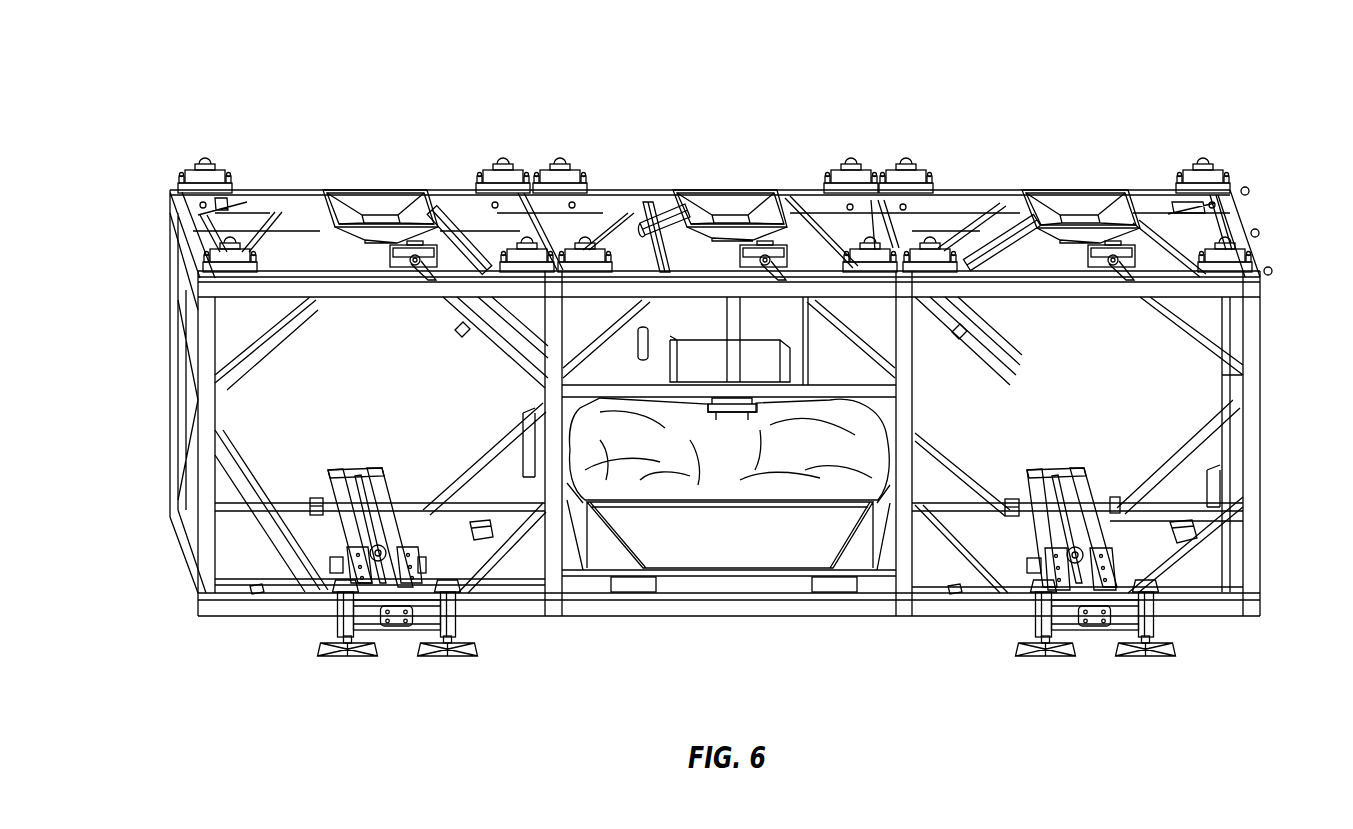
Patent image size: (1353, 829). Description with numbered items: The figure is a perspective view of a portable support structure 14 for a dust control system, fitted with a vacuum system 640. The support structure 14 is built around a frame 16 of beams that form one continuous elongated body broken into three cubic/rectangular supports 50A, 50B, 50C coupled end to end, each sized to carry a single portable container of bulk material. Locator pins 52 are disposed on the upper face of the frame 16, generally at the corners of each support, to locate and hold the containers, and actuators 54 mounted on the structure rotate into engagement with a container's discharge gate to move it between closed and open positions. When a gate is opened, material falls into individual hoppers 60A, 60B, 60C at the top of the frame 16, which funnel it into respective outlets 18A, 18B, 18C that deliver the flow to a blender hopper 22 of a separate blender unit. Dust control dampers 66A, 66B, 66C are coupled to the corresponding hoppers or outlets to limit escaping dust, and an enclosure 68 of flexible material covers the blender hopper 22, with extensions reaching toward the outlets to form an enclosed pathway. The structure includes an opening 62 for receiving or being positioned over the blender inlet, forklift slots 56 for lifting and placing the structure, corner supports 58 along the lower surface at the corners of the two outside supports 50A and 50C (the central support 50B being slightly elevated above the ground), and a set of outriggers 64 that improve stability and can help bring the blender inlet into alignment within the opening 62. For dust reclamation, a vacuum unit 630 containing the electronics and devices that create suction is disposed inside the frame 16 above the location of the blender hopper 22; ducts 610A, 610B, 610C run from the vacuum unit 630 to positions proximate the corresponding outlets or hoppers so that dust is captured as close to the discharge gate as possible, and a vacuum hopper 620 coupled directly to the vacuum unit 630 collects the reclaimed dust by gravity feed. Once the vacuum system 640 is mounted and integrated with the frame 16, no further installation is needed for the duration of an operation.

The support structure 14 is at (190, 88).
The frame 16 is at (205, 490).
The outlet 18A is at (505, 323).
The outlet 18B is at (722, 304).
The outlet 18C is at (952, 323).
The blender hopper 22 is at (715, 548).
The cubic/rectangular support 50A is at (302, 545).
The cubic/rectangular support 50B is at (588, 550).
The cubic/rectangular support 50C is at (1205, 462).
The locator pins 52 is at (203, 163).
The actuators 54 is at (337, 190).
The slots 56 is at (633, 596).
The corner supports 58 is at (487, 523).
The hopper 60A is at (430, 190).
The hopper 60B is at (773, 190).
The hopper 60C is at (1125, 190).
The opening 62 is at (865, 548).
The outriggers 64 is at (330, 647).
The dust control damper 66A is at (385, 215).
The dust control damper 66B is at (738, 215).
The dust control damper 66C is at (1075, 215).
The enclosure 68 is at (811, 490).
The duct 610A is at (455, 213).
The duct 610B is at (665, 210).
The duct 610C is at (1005, 243).
The vacuum hopper 620 is at (737, 410).
The vacuum unit 630 is at (767, 378).
The vacuum system 640 is at (668, 345).